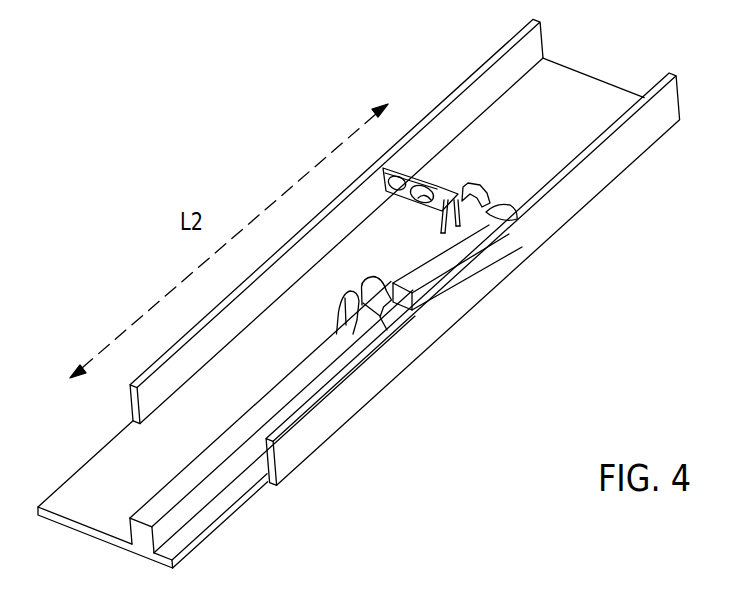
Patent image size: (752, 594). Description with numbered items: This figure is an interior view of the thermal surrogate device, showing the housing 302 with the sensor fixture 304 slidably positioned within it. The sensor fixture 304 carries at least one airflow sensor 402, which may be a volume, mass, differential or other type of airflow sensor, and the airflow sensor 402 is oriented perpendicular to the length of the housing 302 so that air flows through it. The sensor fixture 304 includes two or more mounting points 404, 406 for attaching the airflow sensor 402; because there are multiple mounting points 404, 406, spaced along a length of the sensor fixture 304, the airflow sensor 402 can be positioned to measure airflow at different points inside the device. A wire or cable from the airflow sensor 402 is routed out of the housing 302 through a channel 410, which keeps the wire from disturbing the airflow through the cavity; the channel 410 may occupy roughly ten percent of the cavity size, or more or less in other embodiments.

The housing 302 is at (622, 163).
The sensor fixture 304 is at (100, 540).
The airflow sensor 402 is at (409, 163).
The mounting point 404 is at (484, 204).
The mounting point 406 is at (382, 279).
The channel 410 is at (258, 465).